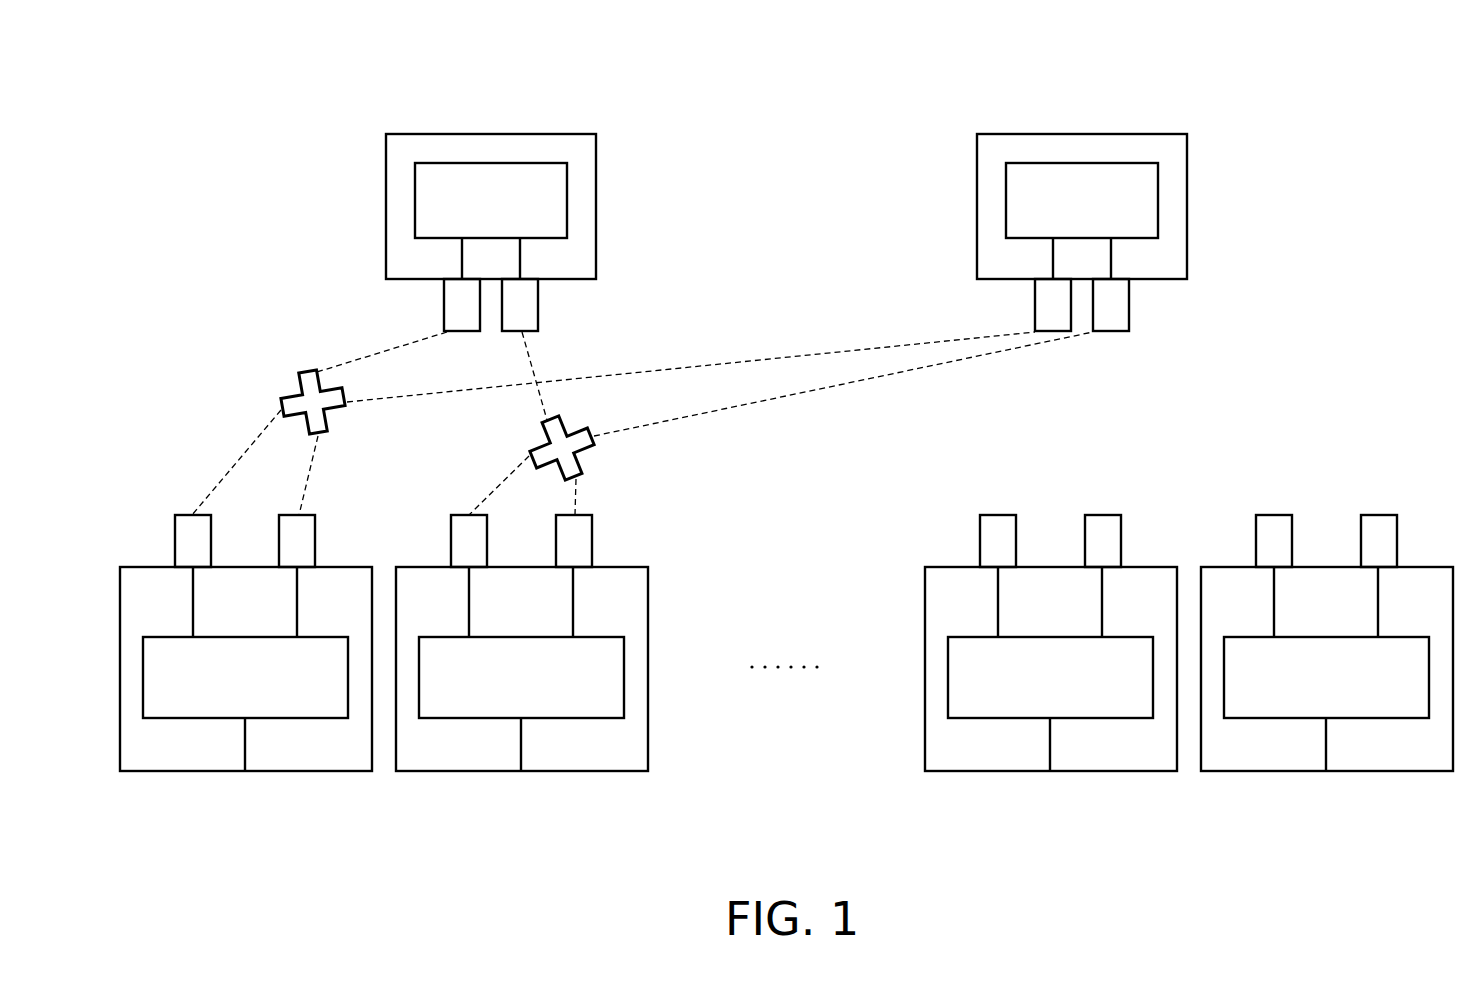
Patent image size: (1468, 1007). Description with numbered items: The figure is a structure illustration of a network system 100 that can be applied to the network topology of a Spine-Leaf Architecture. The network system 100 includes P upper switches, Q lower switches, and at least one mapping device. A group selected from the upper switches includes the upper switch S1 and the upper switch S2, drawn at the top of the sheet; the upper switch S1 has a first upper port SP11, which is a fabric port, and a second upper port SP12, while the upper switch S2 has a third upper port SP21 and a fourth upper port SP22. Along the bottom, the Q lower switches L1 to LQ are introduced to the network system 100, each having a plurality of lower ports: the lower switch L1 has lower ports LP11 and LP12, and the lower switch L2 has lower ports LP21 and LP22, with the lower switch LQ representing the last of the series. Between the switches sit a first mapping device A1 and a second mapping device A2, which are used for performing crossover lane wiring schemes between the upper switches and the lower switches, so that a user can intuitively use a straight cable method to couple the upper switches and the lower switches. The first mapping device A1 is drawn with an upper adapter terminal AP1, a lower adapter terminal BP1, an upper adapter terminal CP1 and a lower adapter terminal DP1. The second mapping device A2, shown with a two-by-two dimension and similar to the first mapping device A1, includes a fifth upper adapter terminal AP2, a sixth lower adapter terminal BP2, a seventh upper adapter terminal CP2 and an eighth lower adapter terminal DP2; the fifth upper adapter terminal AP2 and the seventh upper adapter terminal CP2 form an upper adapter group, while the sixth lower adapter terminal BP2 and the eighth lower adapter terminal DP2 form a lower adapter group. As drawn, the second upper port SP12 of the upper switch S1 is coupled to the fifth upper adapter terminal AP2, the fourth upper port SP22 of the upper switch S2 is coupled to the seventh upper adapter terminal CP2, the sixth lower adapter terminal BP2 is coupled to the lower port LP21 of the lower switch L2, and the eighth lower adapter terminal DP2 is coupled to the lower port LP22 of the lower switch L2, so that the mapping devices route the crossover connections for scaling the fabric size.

The network system 100 is at (208, 80).
The upper switch S1 is at (386, 203).
The upper switch S2 is at (977, 203).
The first upper port SP11 is at (444, 306).
The second upper port SP12 is at (538, 306).
The third upper port SP21 is at (1035, 306).
The fourth upper port SP22 is at (1129, 306).
The first mapping device A1 is at (298, 383).
The second mapping device A2 is at (582, 458).
The upper adapter terminal AP1 is at (368, 352).
The lower adapter terminal BP1 is at (236, 449).
The upper adapter terminal CP1 is at (691, 367).
The lower adapter terminal DP1 is at (338, 474).
The fifth upper adapter terminal AP2 is at (517, 377).
The sixth lower adapter terminal BP2 is at (499, 475).
The seventh upper adapter terminal CP2 is at (840, 384).
The eighth lower adapter terminal DP2 is at (606, 493).
The lower switch L1 is at (172, 773).
The lower switch L2 is at (450, 773).
The lower switch LQ is at (1255, 773).
The lower port LP11 is at (175, 538).
The lower port LP12 is at (316, 545).
The lower port LP21 is at (452, 530).
The lower port LP22 is at (592, 540).